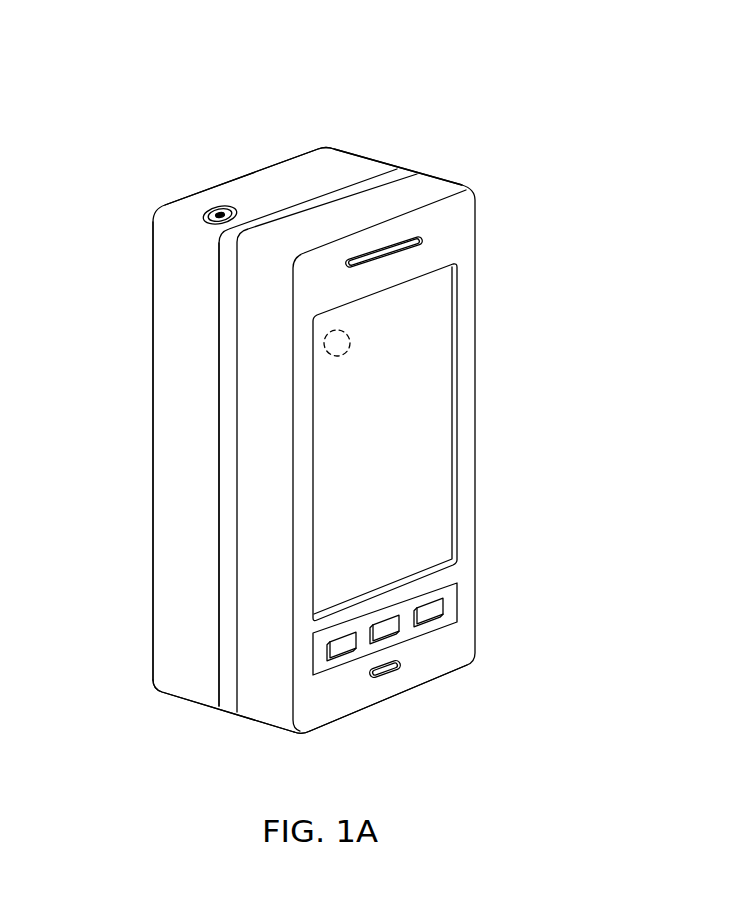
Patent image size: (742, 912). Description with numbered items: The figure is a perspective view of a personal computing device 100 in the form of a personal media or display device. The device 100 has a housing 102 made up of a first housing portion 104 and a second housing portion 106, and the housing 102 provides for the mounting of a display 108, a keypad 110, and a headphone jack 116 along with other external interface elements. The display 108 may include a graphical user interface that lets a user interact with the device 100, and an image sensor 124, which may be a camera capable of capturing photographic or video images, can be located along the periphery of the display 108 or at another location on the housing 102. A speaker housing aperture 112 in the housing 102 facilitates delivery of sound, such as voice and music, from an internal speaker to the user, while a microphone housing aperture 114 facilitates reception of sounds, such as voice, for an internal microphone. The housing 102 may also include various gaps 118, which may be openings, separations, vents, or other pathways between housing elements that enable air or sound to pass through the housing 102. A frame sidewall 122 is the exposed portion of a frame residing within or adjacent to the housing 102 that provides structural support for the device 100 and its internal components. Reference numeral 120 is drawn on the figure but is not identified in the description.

The personal computing device 100 is at (614, 91).
The housing 102 is at (153, 560).
The first housing portion 104 is at (192, 702).
The second housing portion 106 is at (273, 725).
The display 108 is at (445, 318).
The keypad 110 is at (453, 593).
The speaker housing aperture 112 is at (415, 237).
The microphone housing aperture 114 is at (397, 665).
The headphone jack 116 is at (218, 208).
The gaps 118 is at (327, 192).
The seam 120 is at (218, 628).
The frame sidewall 122 is at (393, 172).
The image sensor 124 is at (340, 345).